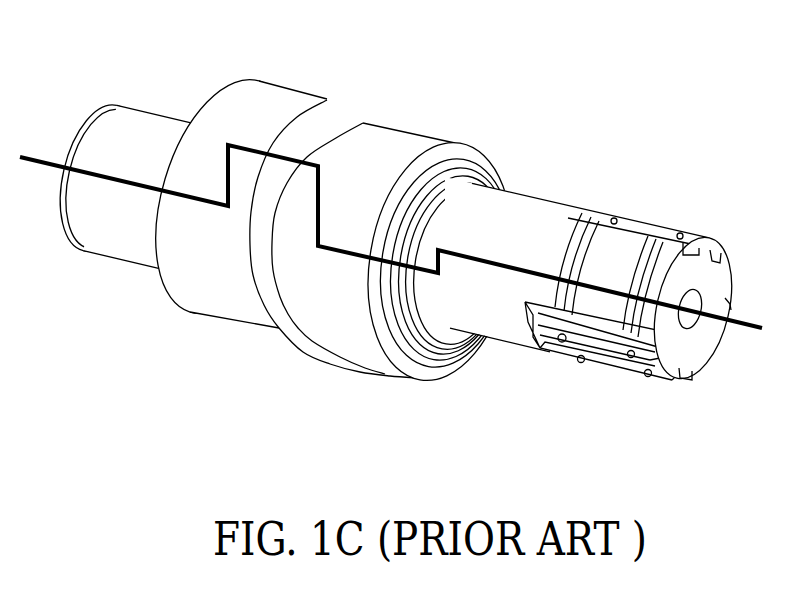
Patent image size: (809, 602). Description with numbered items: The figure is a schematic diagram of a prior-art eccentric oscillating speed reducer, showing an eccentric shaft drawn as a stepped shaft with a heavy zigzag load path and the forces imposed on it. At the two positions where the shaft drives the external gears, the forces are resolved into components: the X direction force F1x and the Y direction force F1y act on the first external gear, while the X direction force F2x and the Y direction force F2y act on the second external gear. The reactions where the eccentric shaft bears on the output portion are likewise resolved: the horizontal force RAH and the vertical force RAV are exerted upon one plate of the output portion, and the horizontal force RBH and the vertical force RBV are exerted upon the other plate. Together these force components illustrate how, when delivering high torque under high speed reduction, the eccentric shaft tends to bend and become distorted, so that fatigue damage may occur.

The horizontal force on plate RAH is at (100, 176).
The vertical force on plate RAV is at (100, 185).
The X direction force on first external gear F1x is at (262, 146).
The Y direction force on first external gear F1y is at (254, 148).
The X direction force on second external gear F2x is at (350, 253).
The Y direction force on second external gear F2y is at (355, 255).
The horizontal force on second plate RBH is at (485, 270).
The vertical force on second plate RBV is at (485, 278).